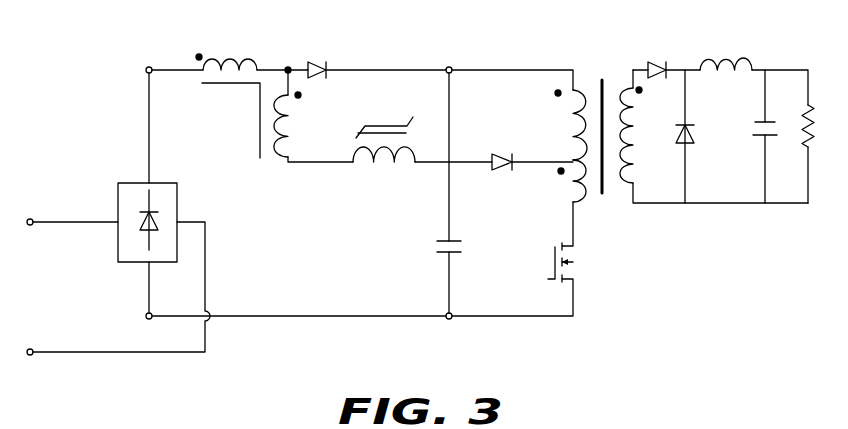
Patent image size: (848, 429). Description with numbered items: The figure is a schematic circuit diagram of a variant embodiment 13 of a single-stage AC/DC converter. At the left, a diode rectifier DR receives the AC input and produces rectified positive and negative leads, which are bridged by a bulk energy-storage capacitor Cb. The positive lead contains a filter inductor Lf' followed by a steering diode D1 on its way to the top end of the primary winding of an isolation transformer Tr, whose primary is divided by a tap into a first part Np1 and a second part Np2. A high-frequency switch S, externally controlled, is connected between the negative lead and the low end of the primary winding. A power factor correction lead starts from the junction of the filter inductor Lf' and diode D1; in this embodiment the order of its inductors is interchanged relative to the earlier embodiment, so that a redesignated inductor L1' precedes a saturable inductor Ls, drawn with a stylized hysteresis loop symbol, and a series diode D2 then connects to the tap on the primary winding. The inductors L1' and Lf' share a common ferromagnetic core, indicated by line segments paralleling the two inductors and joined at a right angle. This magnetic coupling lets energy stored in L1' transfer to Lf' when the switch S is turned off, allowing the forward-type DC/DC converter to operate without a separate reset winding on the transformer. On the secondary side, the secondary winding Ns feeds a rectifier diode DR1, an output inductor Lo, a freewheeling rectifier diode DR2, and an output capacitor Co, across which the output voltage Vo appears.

The variant embodiment 13 is at (118, 88).
The filter inductor Lf' is at (228, 94).
The steering diode D1 is at (303, 67).
The redesignated inductor L1' is at (299, 124).
The saturable inductor Ls is at (384, 156).
The series diode D2 is at (495, 146).
The first part of primary winding Np1 is at (560, 125).
The second part of primary winding Np2 is at (553, 185).
The isolation transformer Tr is at (590, 127).
The secondary winding Ns is at (639, 135).
The rectifier diode DR1 is at (647, 66).
The output inductor Lo is at (726, 47).
The rectifier diode DR2 is at (694, 130).
The output capacitor Co is at (775, 136).
The output voltage Vo is at (821, 128).
The bulk capacitor Cb is at (436, 246).
The high-frequency switch S is at (570, 262).
The diode rectifier DR is at (146, 208).